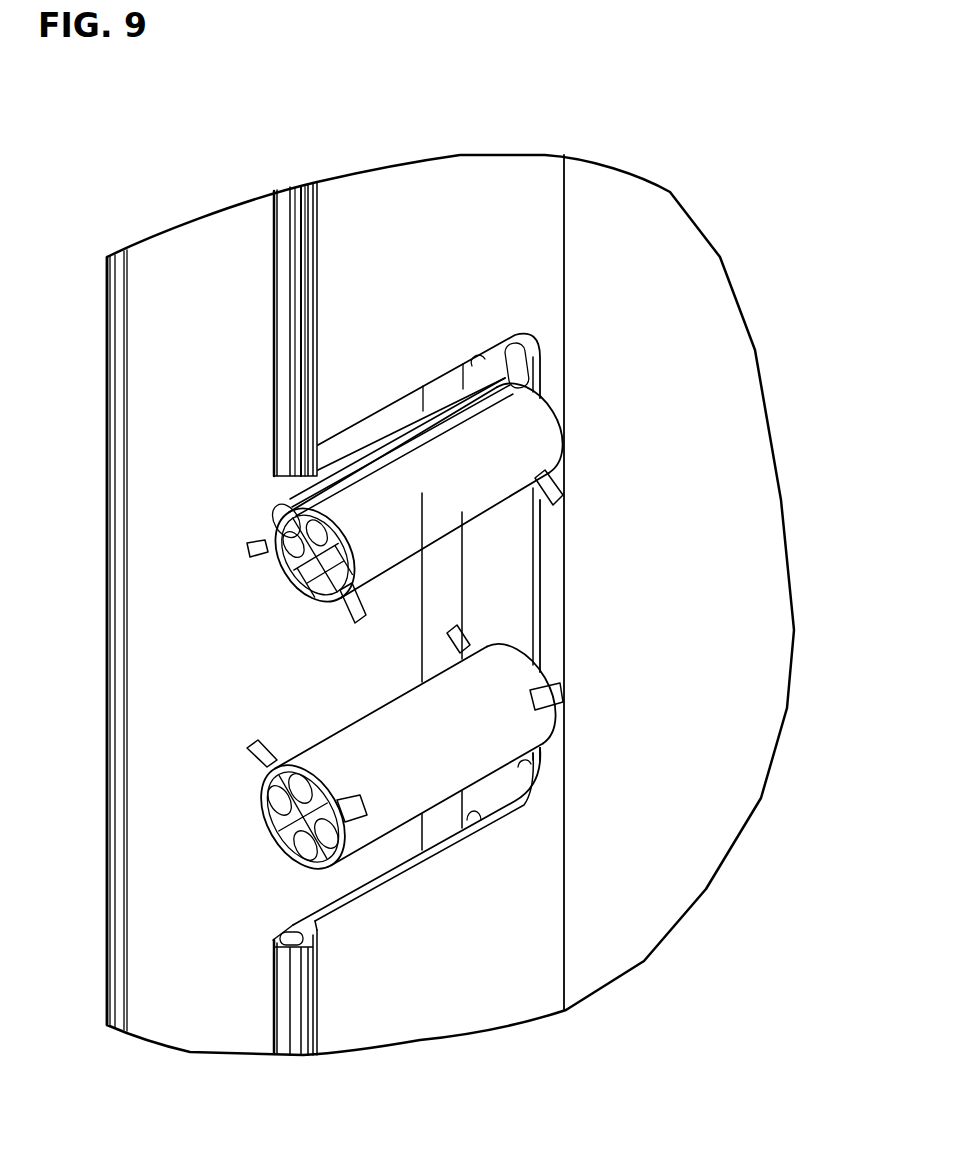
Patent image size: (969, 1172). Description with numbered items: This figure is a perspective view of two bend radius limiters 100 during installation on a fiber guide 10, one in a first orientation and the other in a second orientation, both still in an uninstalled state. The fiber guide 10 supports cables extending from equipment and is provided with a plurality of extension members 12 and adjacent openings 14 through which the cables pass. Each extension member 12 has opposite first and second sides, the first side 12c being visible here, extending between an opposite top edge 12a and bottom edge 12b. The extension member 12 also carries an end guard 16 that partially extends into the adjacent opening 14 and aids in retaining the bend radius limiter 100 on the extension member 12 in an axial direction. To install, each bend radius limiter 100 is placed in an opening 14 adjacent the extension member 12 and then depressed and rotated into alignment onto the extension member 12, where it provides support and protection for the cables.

The fiber guide 10 is at (565, 276).
The extension member 12 is at (418, 385).
The top edge 12a is at (403, 868).
The bottom edge 12b is at (362, 425).
The first side 12c is at (332, 320).
The opening 14 is at (333, 668).
The end guard 16 is at (287, 453).
The bend radius limiter 100 is at (258, 553).